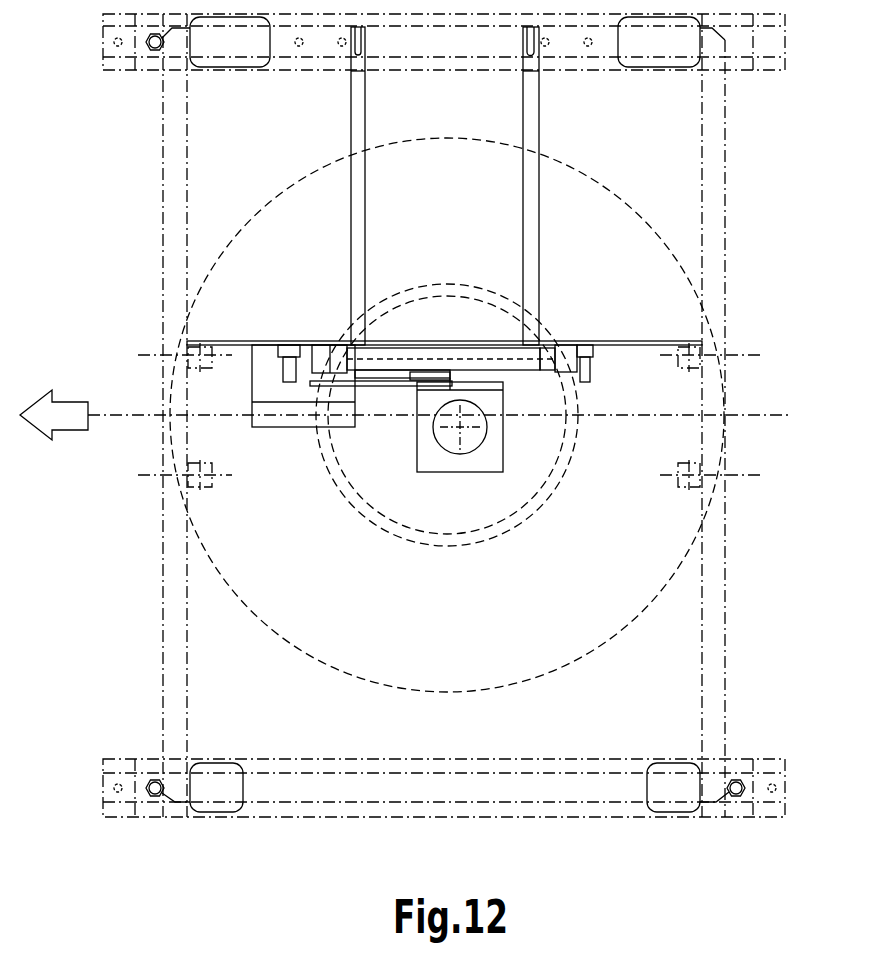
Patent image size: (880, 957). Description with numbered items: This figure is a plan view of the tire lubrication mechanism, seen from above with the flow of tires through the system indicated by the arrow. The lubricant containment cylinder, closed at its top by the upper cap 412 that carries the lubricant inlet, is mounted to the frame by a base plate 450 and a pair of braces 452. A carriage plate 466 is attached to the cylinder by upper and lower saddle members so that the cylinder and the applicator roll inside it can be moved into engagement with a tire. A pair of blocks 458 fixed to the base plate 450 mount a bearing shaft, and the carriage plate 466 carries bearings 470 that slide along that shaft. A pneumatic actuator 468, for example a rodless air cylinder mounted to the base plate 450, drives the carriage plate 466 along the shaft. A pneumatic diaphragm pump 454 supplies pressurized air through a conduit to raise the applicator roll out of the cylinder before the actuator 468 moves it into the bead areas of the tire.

The base plate 450 is at (636, 345).
The braces 452 is at (523, 120).
The pneumatic diaphragm pump 454 is at (288, 427).
The blocks 458 is at (290, 350).
The carriage plate 466 is at (360, 386).
The pneumatic actuator 468 is at (465, 352).
The bearings 470 is at (320, 345).
The upper cap 412 is at (490, 445).